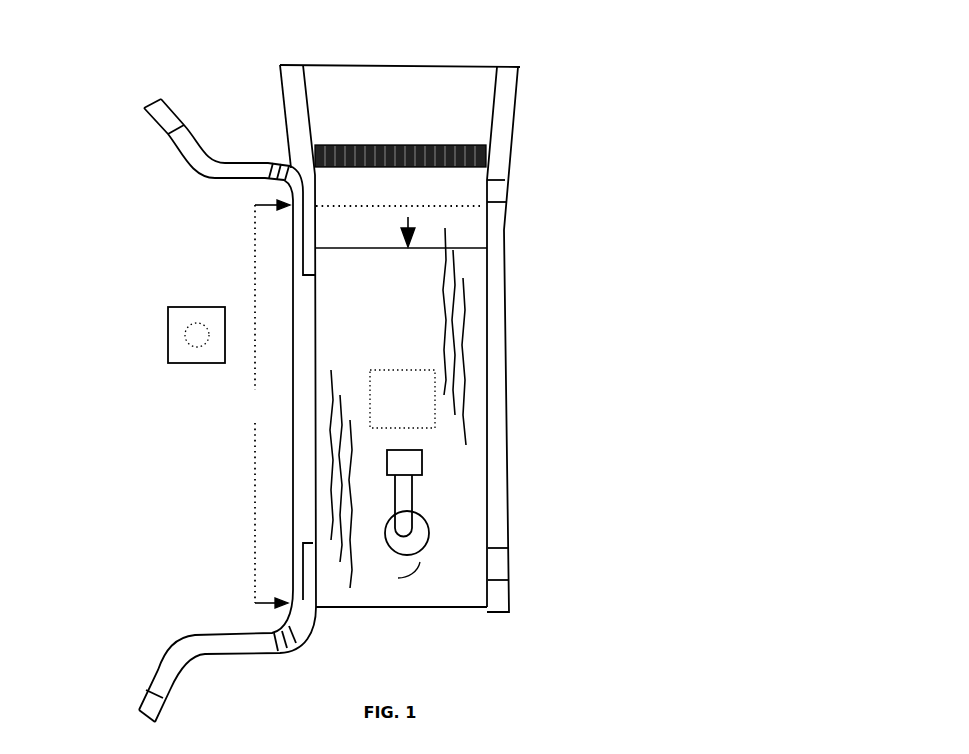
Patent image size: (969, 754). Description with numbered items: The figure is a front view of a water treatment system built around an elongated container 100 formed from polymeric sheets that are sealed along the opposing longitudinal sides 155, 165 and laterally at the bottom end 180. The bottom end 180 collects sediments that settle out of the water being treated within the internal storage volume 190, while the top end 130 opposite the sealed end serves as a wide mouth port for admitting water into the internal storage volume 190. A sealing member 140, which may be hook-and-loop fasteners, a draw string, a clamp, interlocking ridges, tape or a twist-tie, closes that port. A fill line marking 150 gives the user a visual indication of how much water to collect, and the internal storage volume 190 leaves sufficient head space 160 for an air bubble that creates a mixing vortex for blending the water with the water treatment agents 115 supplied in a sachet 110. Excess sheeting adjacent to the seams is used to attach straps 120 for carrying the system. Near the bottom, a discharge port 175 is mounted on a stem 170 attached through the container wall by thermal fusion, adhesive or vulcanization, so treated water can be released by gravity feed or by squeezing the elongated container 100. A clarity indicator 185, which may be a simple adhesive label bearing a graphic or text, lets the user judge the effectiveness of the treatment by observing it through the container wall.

The elongated container 100 is at (240, 90).
The sachet 110 is at (197, 364).
The water treatment agents 115 is at (197, 337).
The straps 120 is at (227, 180).
The top end 130 is at (425, 63).
The sealing member 140 is at (487, 157).
The fill line marking 150 is at (405, 250).
The longitudinal side 155 is at (492, 378).
The head space 160 is at (457, 207).
The longitudinal side 165 is at (297, 437).
The stem 170 is at (407, 520).
The discharge port 175 is at (407, 465).
The bottom end 180 is at (455, 607).
The clarity indicator 185 is at (370, 393).
The internal storage volume 190 is at (265, 404).